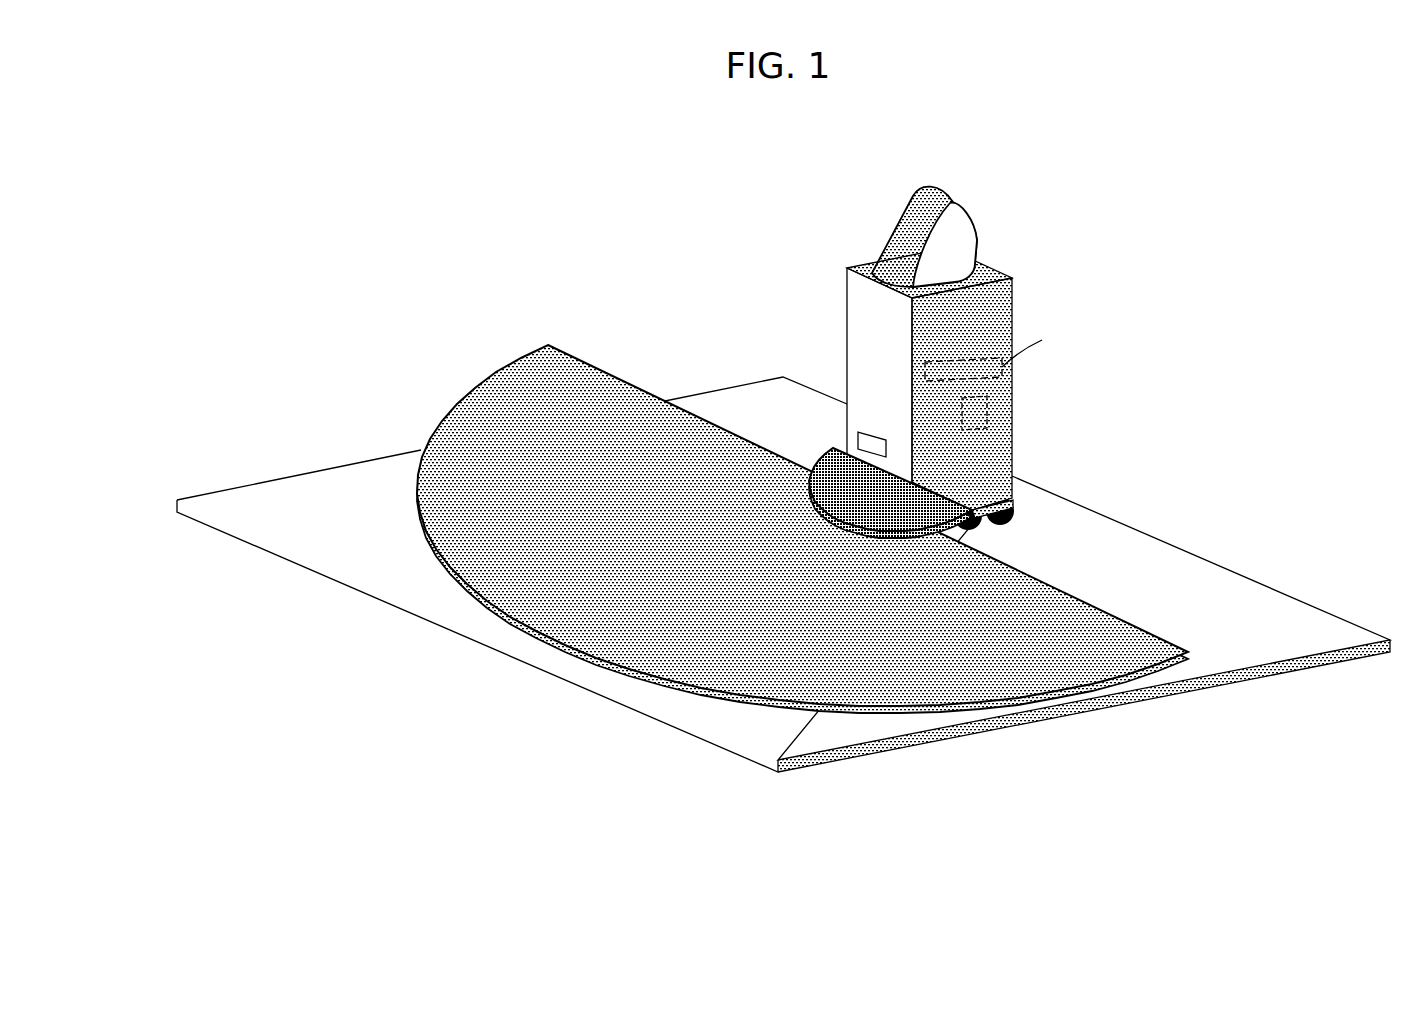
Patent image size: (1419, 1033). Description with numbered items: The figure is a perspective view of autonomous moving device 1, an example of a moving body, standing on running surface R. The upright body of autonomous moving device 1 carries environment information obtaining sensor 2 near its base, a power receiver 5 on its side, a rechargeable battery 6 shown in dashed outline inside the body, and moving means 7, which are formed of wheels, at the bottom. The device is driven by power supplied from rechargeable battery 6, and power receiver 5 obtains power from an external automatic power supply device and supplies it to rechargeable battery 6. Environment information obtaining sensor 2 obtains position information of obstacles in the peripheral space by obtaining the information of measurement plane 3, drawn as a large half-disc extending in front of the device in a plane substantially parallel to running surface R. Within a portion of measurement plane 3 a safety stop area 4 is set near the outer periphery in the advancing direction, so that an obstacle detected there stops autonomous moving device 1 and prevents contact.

The autonomous moving device 1 is at (875, 338).
The environment information obtaining sensor 2 is at (898, 503).
The measurement plane 3 is at (531, 490).
The safety stop area 4 is at (985, 497).
The power receiver 5 is at (860, 437).
The rechargeable battery 6 is at (988, 410).
The moving means 7 is at (1010, 518).
The running surface R is at (1253, 603).